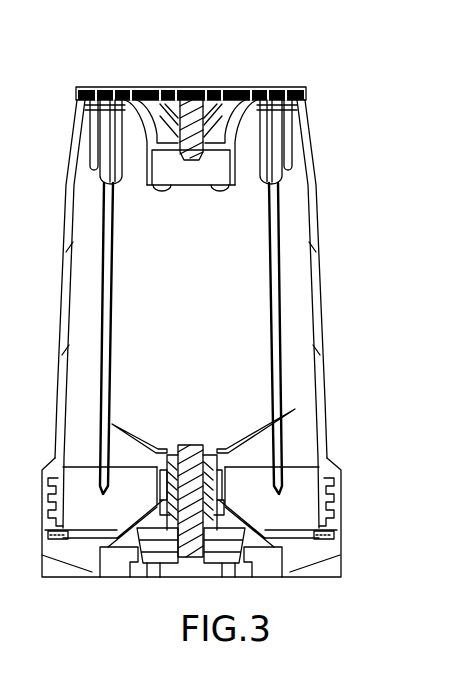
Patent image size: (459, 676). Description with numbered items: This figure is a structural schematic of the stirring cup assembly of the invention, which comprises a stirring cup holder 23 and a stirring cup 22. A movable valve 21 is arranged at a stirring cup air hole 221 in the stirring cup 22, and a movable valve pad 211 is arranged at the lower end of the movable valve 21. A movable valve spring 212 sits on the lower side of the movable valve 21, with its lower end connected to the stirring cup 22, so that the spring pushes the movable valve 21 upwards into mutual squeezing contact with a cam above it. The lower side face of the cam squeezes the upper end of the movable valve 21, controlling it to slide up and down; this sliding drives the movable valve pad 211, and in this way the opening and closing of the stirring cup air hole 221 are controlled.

The movable valve 21 is at (181, 248).
The movable valve pad 211 is at (170, 138).
The movable valve spring 212 is at (175, 140).
The stirring cup air hole 221 is at (210, 143).
The stirring cup 22 is at (315, 227).
The stirring cup holder 23 is at (250, 517).